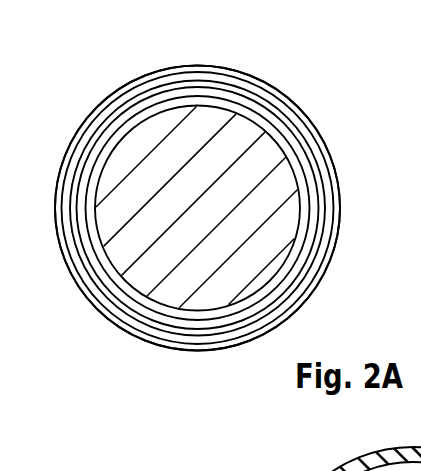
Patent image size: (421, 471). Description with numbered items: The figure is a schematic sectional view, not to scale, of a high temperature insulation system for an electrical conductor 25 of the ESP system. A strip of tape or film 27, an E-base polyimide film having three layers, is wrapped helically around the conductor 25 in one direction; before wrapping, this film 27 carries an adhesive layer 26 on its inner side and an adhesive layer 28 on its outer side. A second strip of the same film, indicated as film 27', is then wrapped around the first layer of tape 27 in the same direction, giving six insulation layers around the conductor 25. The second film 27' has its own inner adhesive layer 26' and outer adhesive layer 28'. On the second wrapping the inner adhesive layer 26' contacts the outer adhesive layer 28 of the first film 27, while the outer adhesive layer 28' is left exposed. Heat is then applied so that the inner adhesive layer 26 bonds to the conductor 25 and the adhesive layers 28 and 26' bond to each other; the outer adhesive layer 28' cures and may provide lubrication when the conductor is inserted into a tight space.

The conductor 25 is at (137, 143).
The adhesive layer 26 is at (161, 208).
The film 27 is at (170, 208).
The adhesive layer 28 is at (192, 223).
The inner adhesive layer 26' is at (198, 198).
The film 27' is at (197, 182).
The outer adhesive layer 28' is at (197, 193).